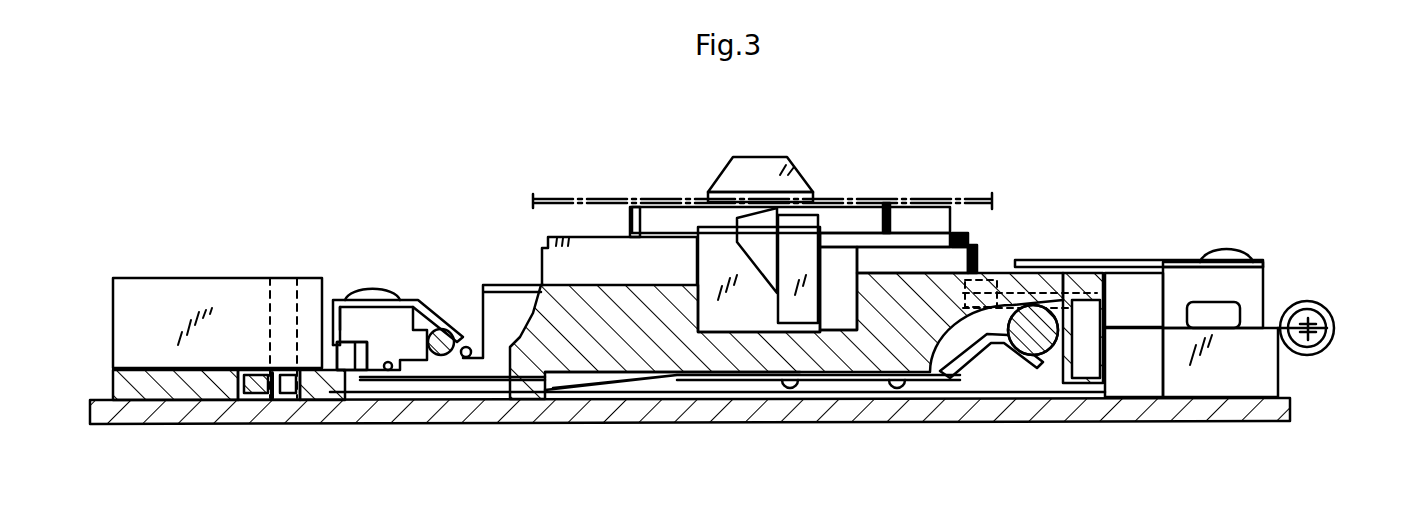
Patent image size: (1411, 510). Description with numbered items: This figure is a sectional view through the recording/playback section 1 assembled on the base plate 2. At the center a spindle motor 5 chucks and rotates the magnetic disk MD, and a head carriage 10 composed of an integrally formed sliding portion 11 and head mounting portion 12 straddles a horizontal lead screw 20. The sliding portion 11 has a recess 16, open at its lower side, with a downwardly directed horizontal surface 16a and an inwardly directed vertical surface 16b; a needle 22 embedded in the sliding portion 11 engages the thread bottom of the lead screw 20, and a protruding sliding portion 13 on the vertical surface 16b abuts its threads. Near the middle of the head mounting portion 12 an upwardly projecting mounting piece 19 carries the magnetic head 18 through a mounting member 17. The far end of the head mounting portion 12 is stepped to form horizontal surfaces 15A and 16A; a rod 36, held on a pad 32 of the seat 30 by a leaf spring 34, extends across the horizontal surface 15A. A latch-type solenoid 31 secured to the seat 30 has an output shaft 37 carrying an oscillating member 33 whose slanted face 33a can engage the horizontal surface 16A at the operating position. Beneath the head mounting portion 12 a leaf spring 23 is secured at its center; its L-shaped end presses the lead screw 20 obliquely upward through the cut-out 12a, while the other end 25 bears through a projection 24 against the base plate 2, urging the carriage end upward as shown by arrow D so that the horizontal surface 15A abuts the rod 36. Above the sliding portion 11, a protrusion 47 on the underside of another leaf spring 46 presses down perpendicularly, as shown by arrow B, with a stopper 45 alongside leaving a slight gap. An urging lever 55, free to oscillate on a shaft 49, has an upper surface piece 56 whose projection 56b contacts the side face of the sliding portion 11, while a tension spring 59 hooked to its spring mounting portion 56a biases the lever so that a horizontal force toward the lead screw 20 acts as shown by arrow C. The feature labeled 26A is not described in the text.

The recording/playback section 1 is at (1276, 150).
The base plate 2 is at (1290, 420).
The spindle motor 5 is at (808, 190).
The head carriage 10 is at (541, 285).
The sliding portion 11 is at (1003, 262).
The head mounting portion 12 is at (508, 295).
The cut-out 12a is at (947, 374).
The protruding sliding portion 13 is at (1078, 382).
The horizontal surface 15A is at (467, 358).
The recess 16 is at (1052, 370).
The horizontal surface 16A is at (385, 371).
The horizontal surface 16a is at (997, 300).
The vertical surface 16b is at (1092, 390).
The mounting member 17 is at (800, 258).
The magnetic head 18 is at (740, 218).
The mounting piece 19 is at (700, 268).
The lead screw 20 is at (1040, 356).
The needle 22 is at (803, 266).
The leaf spring 23 is at (842, 381).
The projection 24 is at (587, 396).
The other end 25 is at (668, 393).
The lever end 26A is at (1010, 340).
The seat 30 is at (113, 384).
The latch-type solenoid 31 is at (140, 278).
The pad 32 is at (390, 290).
The oscillating member 33 is at (335, 377).
The slanted face 33a is at (336, 300).
The leaf spring 34 is at (437, 330).
The rod 36 is at (438, 356).
The output shaft 37 is at (270, 280).
The stopper 45 is at (1180, 262).
The leaf spring 46 is at (1112, 260).
The protrusion 47 is at (1080, 273).
The shaft 49 is at (1240, 310).
The urging lever 55 is at (1278, 370).
The upper surface piece 56 is at (1134, 300).
The spring mounting portion 56a is at (1330, 336).
The projection 56b is at (1137, 362).
The tension spring 59 is at (1336, 325).
The arrow B is at (1121, 280).
The arrow C is at (1122, 380).
The arrow D is at (543, 400).
The magnetic disk MD is at (890, 200).